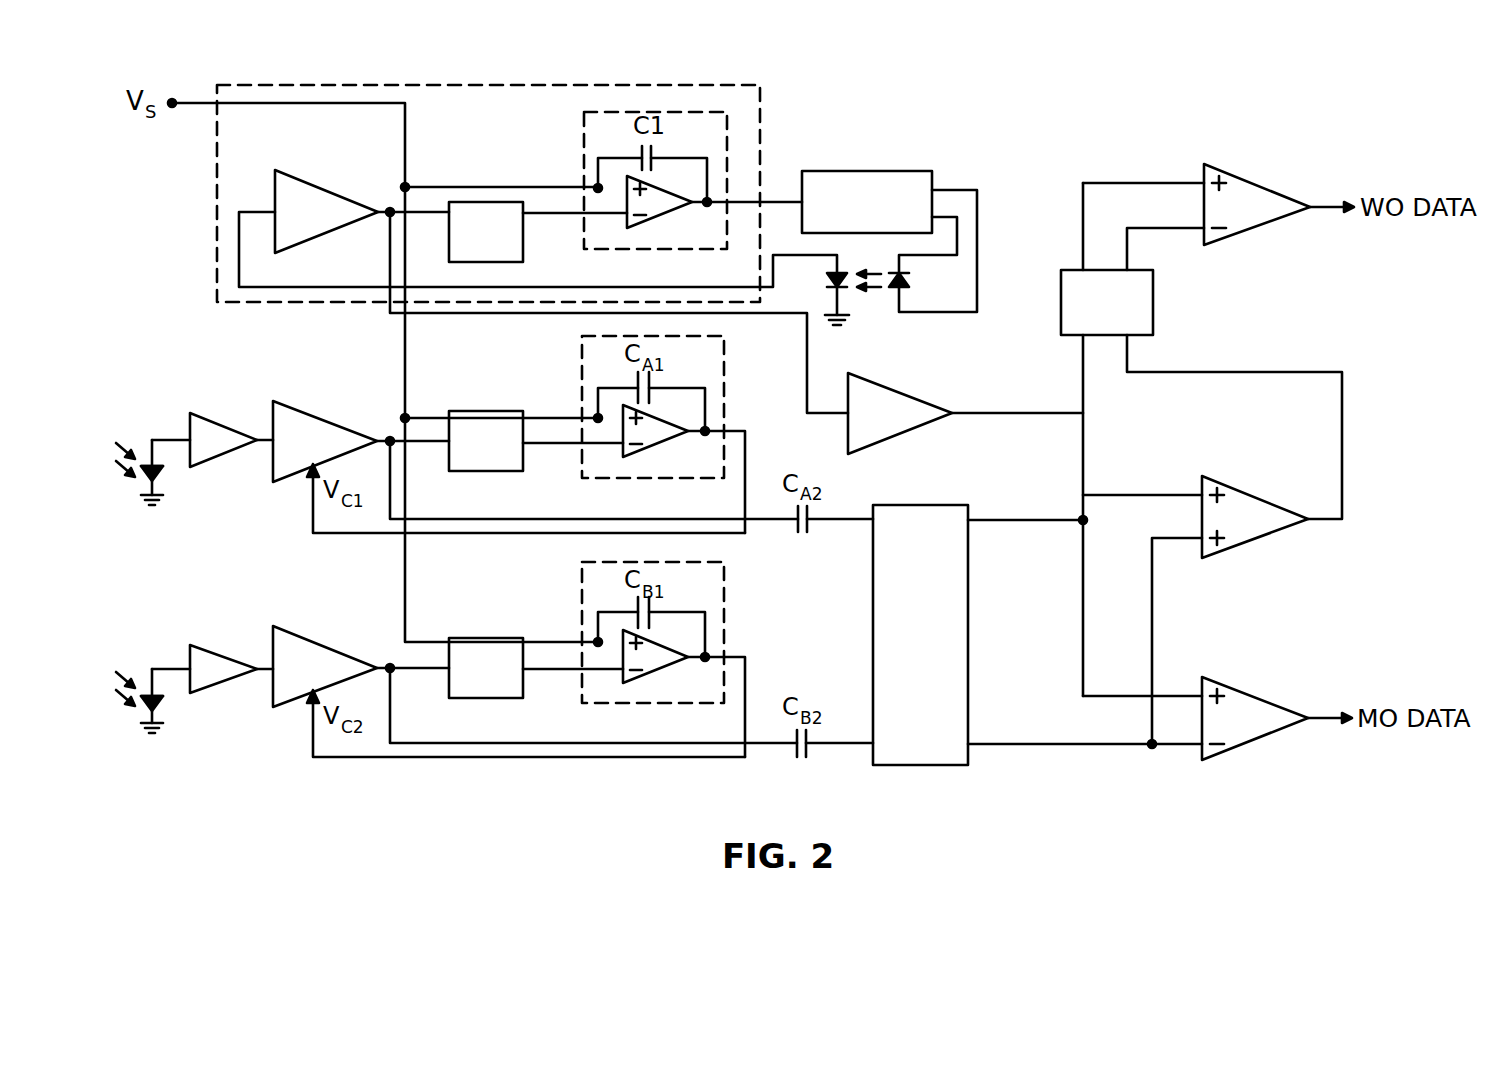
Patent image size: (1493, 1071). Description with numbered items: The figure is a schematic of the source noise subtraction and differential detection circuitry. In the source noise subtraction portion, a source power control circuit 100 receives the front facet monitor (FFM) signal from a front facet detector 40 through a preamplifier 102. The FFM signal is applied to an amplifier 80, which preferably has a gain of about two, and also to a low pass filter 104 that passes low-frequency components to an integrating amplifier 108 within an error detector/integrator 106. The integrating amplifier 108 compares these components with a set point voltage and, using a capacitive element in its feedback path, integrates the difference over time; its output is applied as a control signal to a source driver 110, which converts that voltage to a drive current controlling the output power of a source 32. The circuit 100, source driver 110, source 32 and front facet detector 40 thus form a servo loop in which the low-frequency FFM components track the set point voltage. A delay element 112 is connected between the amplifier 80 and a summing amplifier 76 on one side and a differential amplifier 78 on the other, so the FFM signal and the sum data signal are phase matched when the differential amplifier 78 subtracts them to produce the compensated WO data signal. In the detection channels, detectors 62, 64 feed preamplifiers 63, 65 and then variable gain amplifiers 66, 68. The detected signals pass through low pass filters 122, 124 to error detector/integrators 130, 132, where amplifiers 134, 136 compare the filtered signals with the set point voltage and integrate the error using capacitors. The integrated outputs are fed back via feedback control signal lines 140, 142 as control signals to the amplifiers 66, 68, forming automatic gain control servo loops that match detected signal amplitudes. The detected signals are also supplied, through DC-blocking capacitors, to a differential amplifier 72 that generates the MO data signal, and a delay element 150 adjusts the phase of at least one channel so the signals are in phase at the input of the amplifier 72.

The source 32 is at (910, 283).
The front facet detector 40 is at (829, 284).
The detector 62 is at (165, 476).
The preamplifier 63 is at (215, 422).
The detector 64 is at (165, 705).
The preamplifier 65 is at (215, 650).
The variable gain amplifier 66 is at (328, 419).
The variable gain amplifier 68 is at (328, 644).
The differential amplifier 72 is at (1248, 696).
The summing amplifier 76 is at (1250, 495).
The differential amplifier 78 is at (1258, 183).
The amplifier 80 is at (899, 392).
The source power control circuit 100 is at (217, 179).
The preamplifier 102 is at (325, 188).
The low pass filter 104 is at (523, 255).
The error detector/integrator 106 is at (584, 148).
The integrating amplifier 108 is at (666, 210).
The source driver 110 is at (868, 171).
The delay element 112 is at (1153, 302).
The low pass filter 122 is at (523, 477).
The low pass filter 124 is at (523, 702).
The error detector/integrator 130 is at (582, 384).
The error detector/integrator 132 is at (582, 610).
The amplifier 134 is at (662, 440).
The amplifier 136 is at (662, 666).
The feedback control signal line 140 is at (745, 500).
The feedback control signal line 142 is at (745, 723).
The delay element 150 is at (873, 619).